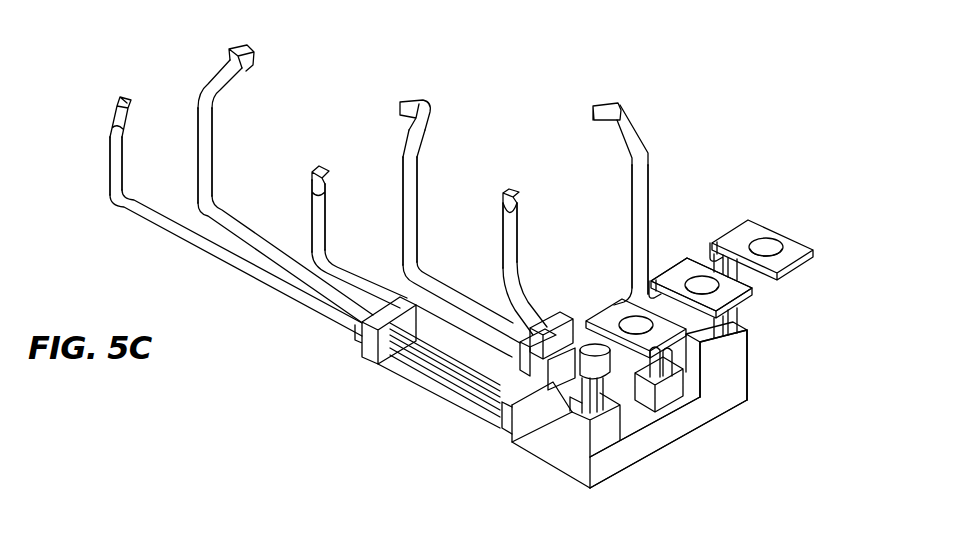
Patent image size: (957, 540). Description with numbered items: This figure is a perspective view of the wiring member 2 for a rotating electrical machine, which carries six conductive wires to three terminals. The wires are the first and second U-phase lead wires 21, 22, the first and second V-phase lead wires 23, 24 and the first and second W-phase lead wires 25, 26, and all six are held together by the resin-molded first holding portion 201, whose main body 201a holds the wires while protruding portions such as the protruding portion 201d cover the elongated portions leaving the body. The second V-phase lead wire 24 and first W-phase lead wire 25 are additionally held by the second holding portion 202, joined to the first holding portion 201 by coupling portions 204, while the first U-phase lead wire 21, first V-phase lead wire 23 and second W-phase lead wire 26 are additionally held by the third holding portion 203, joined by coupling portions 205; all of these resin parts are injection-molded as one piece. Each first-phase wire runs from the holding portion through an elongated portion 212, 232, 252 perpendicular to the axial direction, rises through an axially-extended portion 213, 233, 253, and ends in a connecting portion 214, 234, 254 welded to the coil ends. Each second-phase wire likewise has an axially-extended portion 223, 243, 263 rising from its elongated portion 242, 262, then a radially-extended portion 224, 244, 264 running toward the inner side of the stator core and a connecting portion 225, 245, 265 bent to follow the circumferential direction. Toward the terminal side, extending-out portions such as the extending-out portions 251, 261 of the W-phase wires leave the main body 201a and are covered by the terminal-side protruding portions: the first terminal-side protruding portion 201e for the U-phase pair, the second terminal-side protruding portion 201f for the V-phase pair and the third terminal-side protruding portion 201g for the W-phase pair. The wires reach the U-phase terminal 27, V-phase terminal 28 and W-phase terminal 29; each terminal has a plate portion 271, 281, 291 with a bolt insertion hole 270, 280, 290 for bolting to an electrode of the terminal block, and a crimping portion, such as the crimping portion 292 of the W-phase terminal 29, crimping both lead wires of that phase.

The wiring member for rotating electrical machine 2 is at (797, 445).
The first U-phase lead wire 21 is at (313, 165).
The elongated portion 212 is at (333, 275).
The axially-extended portion 213 is at (316, 215).
The connecting portion 214 is at (321, 180).
The second U-phase lead wire 22 is at (631, 103).
The axially-extended portion 223 is at (640, 232).
The radially-extended portion 224 is at (637, 135).
The connecting portion 225 is at (600, 104).
The first V-phase lead wire 23 is at (110, 88).
The elongated portion 232 is at (155, 222).
The axially-extended portion 233 is at (115, 150).
The connecting portion 234 is at (122, 98).
The second V-phase lead wire 24 is at (443, 106).
The elongated portion 242 is at (477, 305).
The axially-extended portion 243 is at (406, 205).
The radially-extended portion 244 is at (416, 143).
The connecting portion 245 is at (406, 100).
The first W-phase lead wire 25 is at (500, 186).
The elongated portion 252 is at (507, 305).
The axially-extended portion 253 is at (517, 245).
The connecting portion 254 is at (515, 203).
The second W-phase lead wire 26 is at (259, 48).
The elongated portion 262 is at (300, 268).
The axially-extended portion 263 is at (207, 153).
The radially-extended portion 264 is at (222, 86).
The connecting portion 265 is at (230, 54).
The U-phase terminal 27 is at (826, 240).
The bolt insertion hole 270 is at (768, 248).
The plate portion 271 is at (757, 216).
The V-phase terminal 28 is at (757, 301).
The bolt insertion hole 280 is at (746, 302).
The plate portion 281 is at (700, 268).
The W-phase terminal 29 is at (745, 388).
The bolt insertion hole 290 is at (668, 388).
The plate portion 291 is at (624, 300).
The crimping portion 292 is at (514, 430).
The first holding portion 201 is at (673, 440).
The main body 201a is at (567, 465).
The protruding portion 201d is at (508, 426).
The first terminal-side protruding portion 201e is at (740, 354).
The second terminal-side protruding portion 201f is at (672, 388).
The third terminal-side protruding portion 201g is at (612, 457).
The second holding portion 202 is at (540, 312).
The third holding portion 203 is at (370, 348).
The coupling portions 204 is at (568, 316).
The coupling portions 205 is at (442, 376).
The extending-out portion 251 is at (603, 430).
The extending-out portion 261 is at (570, 387).